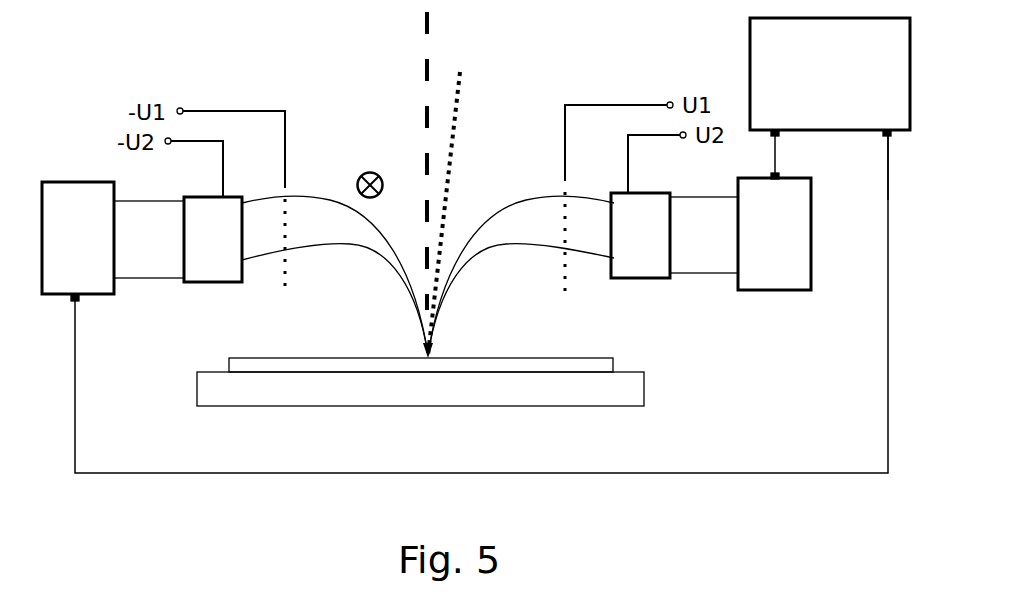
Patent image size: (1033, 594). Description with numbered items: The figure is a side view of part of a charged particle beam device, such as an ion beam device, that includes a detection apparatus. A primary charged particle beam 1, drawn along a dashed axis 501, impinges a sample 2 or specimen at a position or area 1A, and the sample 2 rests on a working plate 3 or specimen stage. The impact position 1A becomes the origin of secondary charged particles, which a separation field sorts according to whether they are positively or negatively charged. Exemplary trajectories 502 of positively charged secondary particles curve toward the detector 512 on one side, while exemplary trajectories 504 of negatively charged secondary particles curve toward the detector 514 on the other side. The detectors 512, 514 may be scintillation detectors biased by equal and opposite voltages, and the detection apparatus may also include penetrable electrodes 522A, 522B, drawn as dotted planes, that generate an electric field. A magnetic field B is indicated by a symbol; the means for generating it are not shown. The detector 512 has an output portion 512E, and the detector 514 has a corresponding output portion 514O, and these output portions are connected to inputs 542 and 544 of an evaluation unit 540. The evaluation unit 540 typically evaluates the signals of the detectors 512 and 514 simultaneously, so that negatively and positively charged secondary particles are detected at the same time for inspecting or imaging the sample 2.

The primary charged particle beam 1 is at (463, 82).
The position or area 1A is at (432, 356).
The sample 2 is at (604, 363).
The working plate 3 is at (604, 396).
The magnetic field B is at (360, 179).
The optical axis 501 is at (428, 62).
The trajectories of positively charged secondary particles 502 is at (326, 243).
The trajectories of negatively charged secondary particles 504 is at (495, 243).
The detector 512 is at (66, 162).
The output portion 512E is at (80, 300).
The detector 514 is at (757, 318).
The second electrode output terminal 514O is at (783, 175).
The penetrable electrode 522A is at (287, 283).
The penetrable electrode 522B is at (563, 290).
The evaluation unit 540 is at (750, 78).
The input 542 is at (886, 140).
The input 544 is at (783, 133).